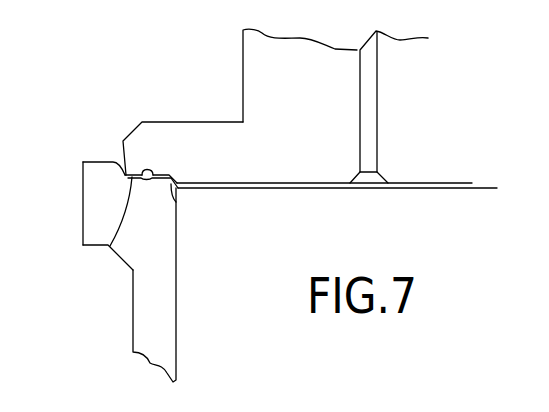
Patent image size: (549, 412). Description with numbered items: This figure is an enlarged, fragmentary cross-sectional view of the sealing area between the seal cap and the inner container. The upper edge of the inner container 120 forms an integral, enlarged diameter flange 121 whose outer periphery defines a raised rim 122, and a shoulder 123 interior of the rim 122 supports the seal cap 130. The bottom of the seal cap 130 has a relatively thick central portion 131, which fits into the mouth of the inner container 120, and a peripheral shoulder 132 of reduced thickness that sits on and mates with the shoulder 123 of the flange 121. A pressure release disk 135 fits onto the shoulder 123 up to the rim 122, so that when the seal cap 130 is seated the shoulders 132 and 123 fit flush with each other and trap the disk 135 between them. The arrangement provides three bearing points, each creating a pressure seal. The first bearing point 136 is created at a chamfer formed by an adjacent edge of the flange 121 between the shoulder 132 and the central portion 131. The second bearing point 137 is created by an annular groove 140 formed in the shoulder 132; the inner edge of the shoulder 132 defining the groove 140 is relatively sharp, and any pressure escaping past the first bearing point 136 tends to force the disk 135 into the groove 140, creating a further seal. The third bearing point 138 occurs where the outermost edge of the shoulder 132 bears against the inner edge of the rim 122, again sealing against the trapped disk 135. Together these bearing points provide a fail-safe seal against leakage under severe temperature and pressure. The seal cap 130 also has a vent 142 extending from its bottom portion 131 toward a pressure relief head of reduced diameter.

The inner container 120 is at (170, 350).
The flange 121 is at (82, 198).
The rim 122 is at (100, 163).
The shoulder 123 is at (128, 176).
The seal cap 130 is at (253, 62).
The central portion 131 is at (290, 182).
The peripheral shoulder 132 is at (163, 176).
The pressure release disk 135 is at (418, 188).
The first bearing point 136 is at (173, 202).
The second bearing point 137 is at (150, 178).
The third bearing point 138 is at (112, 245).
The annular groove 140 is at (143, 170).
The vent 142 is at (377, 100).